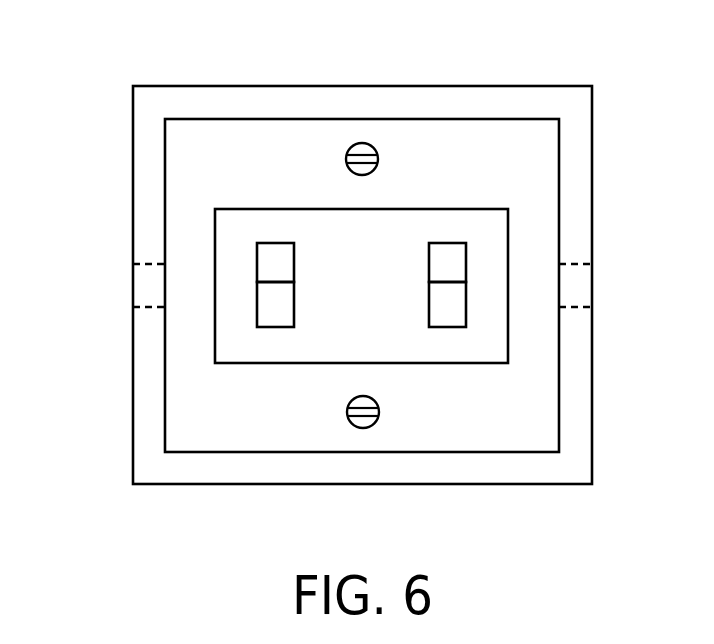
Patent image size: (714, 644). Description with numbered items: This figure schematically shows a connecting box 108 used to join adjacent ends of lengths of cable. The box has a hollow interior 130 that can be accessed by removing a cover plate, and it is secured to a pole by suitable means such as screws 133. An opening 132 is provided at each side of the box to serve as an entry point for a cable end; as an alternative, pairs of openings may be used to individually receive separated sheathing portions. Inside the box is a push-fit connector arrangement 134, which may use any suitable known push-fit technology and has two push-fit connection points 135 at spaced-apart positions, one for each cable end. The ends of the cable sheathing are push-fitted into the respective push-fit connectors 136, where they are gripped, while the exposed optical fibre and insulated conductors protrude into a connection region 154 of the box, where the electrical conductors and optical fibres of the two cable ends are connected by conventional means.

The connecting box 108 is at (556, 80).
The hollow interior 130 is at (413, 437).
The opening 132 is at (147, 312).
The screws 133 is at (360, 143).
The push-fit connector arrangement 134 is at (487, 203).
The push-fit connection points 135 is at (480, 317).
The push-fit connectors 136 is at (272, 262).
The connection region 154 is at (378, 240).